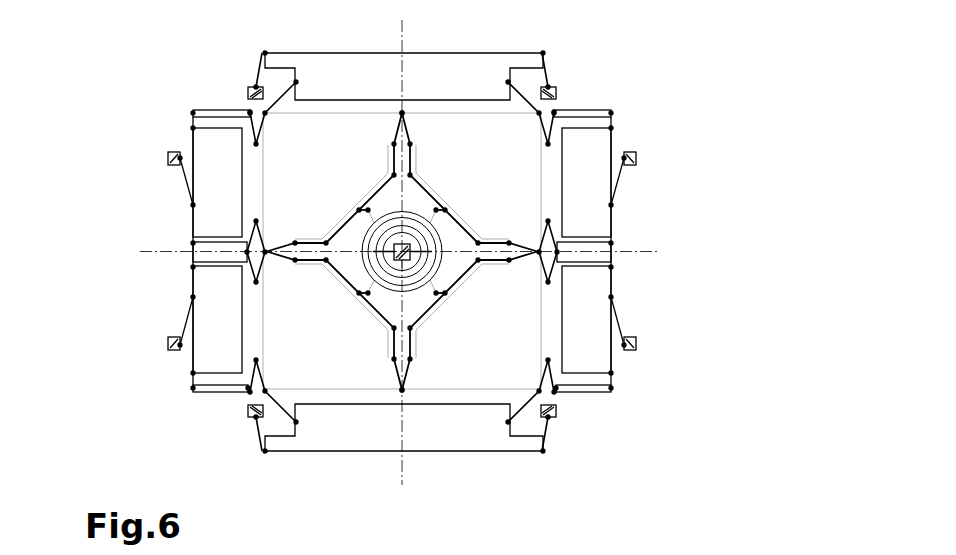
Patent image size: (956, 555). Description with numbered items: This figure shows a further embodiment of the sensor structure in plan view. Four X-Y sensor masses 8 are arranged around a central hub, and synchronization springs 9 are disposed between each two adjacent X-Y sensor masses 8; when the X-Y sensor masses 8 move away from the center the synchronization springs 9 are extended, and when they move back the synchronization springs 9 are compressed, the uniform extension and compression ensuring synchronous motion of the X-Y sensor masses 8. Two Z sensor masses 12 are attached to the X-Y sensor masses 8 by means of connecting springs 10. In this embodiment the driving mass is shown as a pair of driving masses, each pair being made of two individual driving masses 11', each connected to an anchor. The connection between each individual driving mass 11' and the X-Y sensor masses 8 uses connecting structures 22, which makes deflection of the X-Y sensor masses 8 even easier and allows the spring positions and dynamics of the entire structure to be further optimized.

The X-Y sensor mass 8 is at (275, 155).
The synchronization spring 9 is at (393, 128).
The connecting spring 10 is at (256, 253).
The individual driving mass 11' is at (417, 251).
The Z sensor mass 12 is at (433, 72).
The connecting structure 22 is at (203, 109).